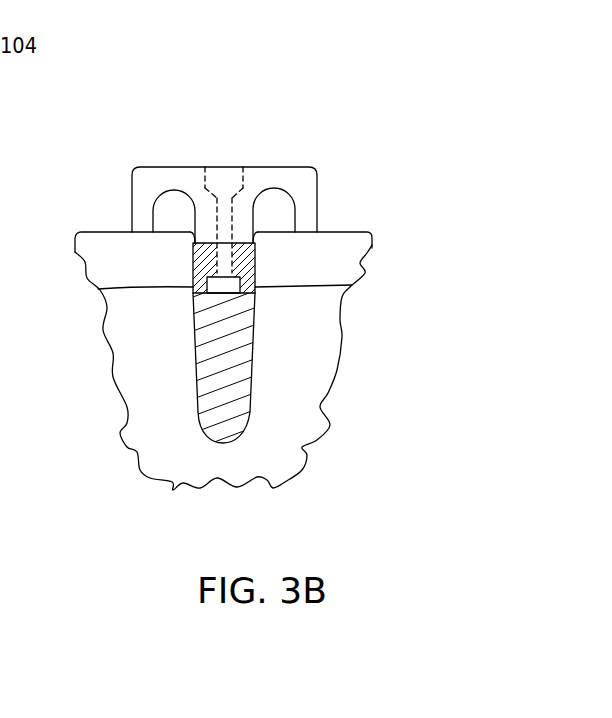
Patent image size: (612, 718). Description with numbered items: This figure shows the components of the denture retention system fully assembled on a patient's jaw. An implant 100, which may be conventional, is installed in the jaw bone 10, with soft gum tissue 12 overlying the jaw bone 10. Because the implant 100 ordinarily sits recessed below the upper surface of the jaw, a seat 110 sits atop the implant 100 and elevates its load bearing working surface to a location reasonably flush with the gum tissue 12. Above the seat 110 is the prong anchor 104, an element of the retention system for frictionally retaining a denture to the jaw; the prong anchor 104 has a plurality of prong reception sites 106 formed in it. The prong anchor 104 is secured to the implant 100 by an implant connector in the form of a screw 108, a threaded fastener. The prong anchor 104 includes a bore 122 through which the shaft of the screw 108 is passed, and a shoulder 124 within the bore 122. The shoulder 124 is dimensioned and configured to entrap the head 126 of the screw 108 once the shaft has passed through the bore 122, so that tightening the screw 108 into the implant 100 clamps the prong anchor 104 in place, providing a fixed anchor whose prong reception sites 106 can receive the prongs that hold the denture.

The jaw bone 10 is at (147, 412).
The gum tissue 12 is at (112, 260).
The implant 100 is at (253, 352).
The prong anchor 104 is at (293, 165).
The prong reception sites 106 is at (172, 213).
The screw 108 is at (221, 185).
The seat 110 is at (240, 265).
The bore 122 is at (243, 132).
The shoulder 124 is at (210, 195).
The head 126 is at (232, 182).